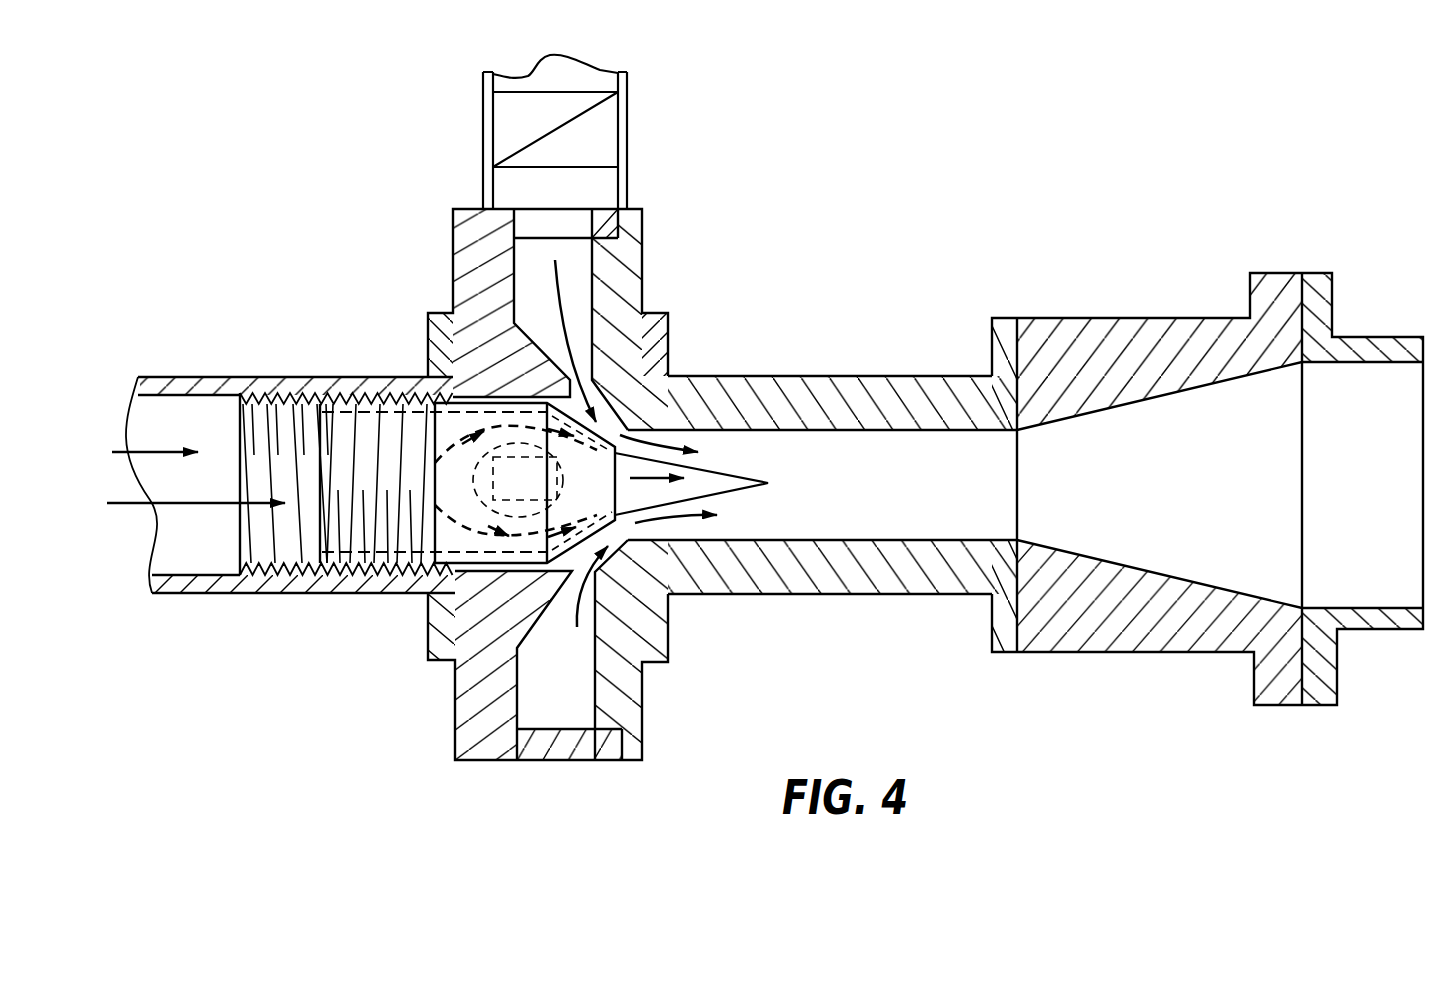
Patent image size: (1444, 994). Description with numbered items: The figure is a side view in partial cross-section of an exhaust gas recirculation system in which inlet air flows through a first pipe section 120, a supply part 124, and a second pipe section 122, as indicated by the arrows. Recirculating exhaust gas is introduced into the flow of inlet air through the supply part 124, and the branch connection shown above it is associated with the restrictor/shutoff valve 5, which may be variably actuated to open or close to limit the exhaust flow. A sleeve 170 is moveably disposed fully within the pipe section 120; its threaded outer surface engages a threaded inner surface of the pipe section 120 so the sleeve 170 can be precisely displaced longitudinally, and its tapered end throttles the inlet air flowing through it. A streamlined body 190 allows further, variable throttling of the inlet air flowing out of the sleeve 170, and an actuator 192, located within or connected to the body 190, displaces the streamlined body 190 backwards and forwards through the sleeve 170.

The first pipe section 120 is at (228, 376).
The sleeve 170 is at (375, 455).
The streamlined body 190 is at (735, 473).
The actuator 192 is at (540, 495).
The second pipe section 122 is at (818, 596).
The supply part 124 is at (472, 672).
The restrictor/shutoff valve 5 is at (642, 90).